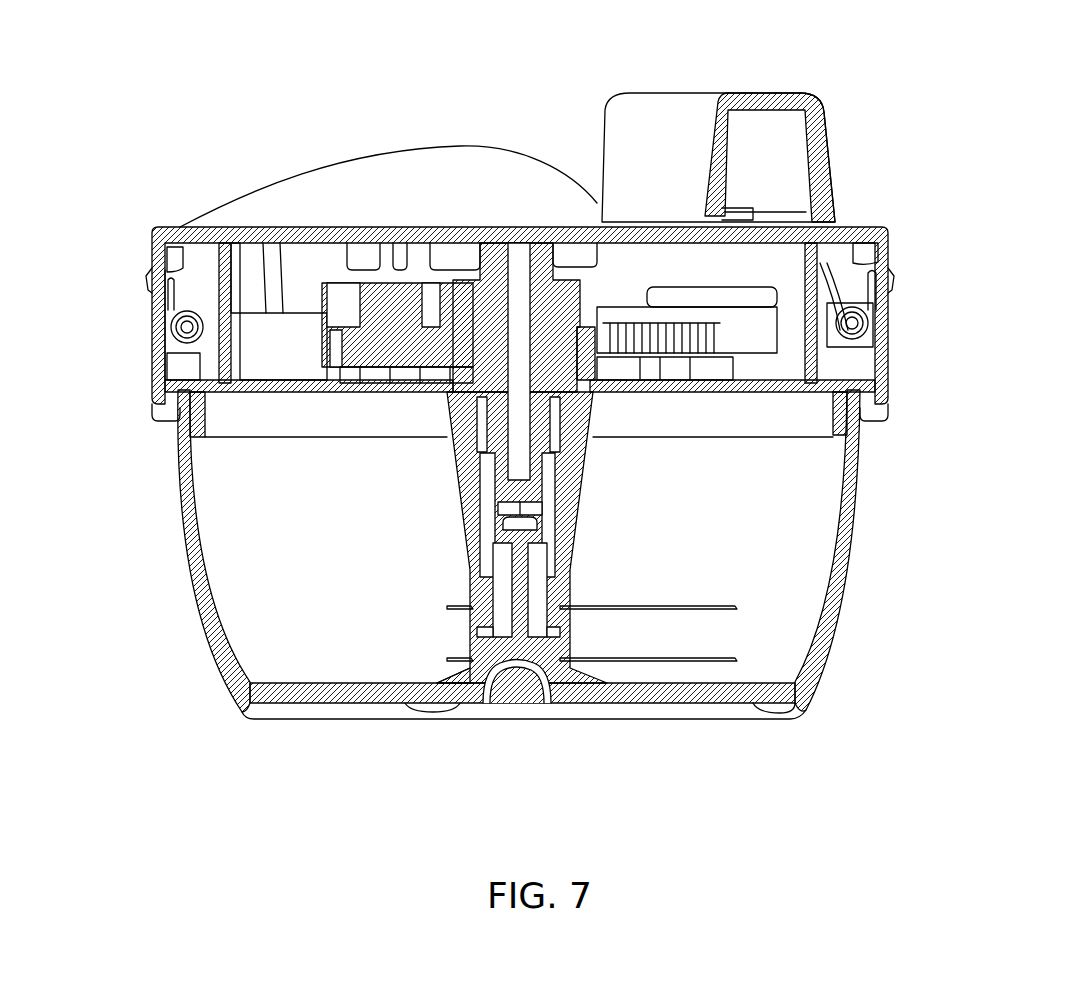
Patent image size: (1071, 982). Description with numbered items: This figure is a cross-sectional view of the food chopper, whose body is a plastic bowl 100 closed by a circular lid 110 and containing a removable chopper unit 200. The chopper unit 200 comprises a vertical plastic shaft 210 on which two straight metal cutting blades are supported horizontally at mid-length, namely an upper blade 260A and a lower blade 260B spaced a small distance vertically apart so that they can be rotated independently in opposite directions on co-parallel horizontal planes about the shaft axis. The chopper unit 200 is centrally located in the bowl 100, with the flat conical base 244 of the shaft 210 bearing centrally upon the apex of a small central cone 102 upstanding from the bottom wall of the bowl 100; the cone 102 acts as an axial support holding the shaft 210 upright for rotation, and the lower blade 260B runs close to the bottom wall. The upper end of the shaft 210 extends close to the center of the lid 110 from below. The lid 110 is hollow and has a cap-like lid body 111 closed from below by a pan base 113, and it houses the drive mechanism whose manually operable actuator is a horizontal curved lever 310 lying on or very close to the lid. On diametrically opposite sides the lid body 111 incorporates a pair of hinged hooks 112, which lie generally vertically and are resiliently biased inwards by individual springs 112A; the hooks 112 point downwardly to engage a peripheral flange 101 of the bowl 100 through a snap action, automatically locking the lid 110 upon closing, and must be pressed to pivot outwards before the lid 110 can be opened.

The bowl 100 is at (875, 585).
The peripheral flange 101 is at (175, 402).
The central cone 102 is at (517, 676).
The lid 110 is at (873, 228).
The lid body 111 is at (343, 236).
The hinged hooks 112 is at (150, 345).
The springs 112A is at (170, 295).
The pan base 113 is at (335, 392).
The chopper unit 200 is at (413, 532).
The shaft 210 is at (570, 533).
The conical base 244 is at (460, 684).
The upper blade 260A is at (735, 610).
The lower blade 260B is at (665, 662).
The lever 310 is at (652, 122).